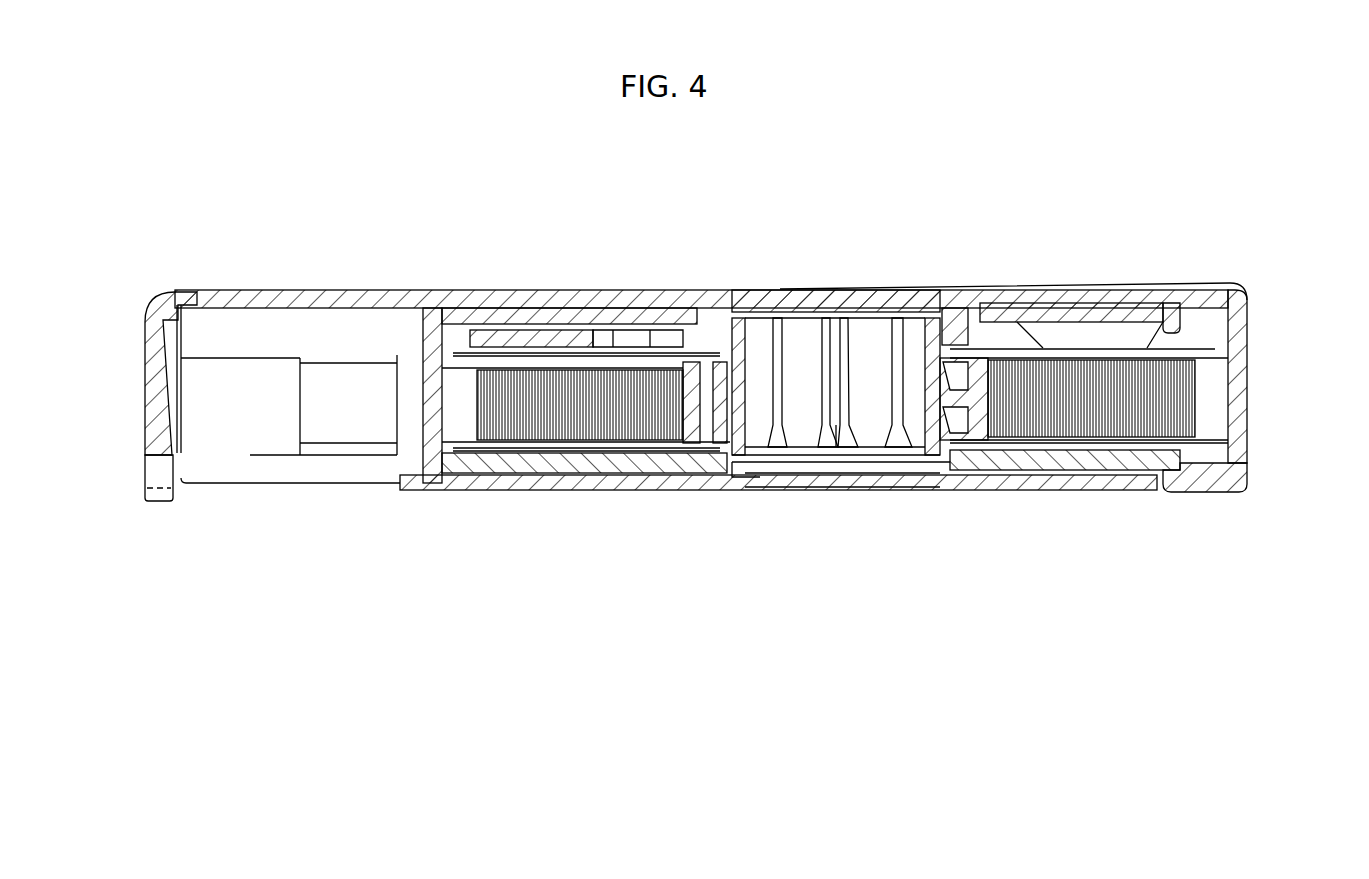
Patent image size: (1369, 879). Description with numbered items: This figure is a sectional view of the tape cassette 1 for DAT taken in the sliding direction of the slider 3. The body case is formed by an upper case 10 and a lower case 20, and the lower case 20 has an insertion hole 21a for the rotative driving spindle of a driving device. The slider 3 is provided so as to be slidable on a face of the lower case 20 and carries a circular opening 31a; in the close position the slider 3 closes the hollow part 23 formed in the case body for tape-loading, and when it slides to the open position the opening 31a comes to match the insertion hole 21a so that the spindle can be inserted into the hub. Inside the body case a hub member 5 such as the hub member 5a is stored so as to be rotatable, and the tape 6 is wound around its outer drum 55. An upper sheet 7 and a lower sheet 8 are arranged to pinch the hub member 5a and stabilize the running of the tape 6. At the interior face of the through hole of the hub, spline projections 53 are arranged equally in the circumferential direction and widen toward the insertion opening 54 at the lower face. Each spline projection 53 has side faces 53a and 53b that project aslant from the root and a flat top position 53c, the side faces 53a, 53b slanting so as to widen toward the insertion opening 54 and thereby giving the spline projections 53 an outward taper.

The tape cassette 1 is at (310, 291).
The slider 3 is at (553, 491).
The hub member 5 is at (150, 413).
The hub member 5a is at (803, 306).
The tape 6 is at (1190, 402).
The upper sheet 7 is at (1200, 348).
The lower sheet 8 is at (1207, 437).
The upper case 10 is at (1237, 352).
The lower case 20 is at (1233, 482).
The insertion hole 21a is at (752, 473).
The hollow part 23 is at (262, 467).
The circular opening 31a is at (880, 487).
The spline projection 53 is at (850, 326).
The side face 53a is at (823, 412).
The side face 53b is at (883, 447).
The top position 53c is at (837, 423).
The insertion opening 54 is at (848, 418).
The outer drum 55 is at (982, 403).